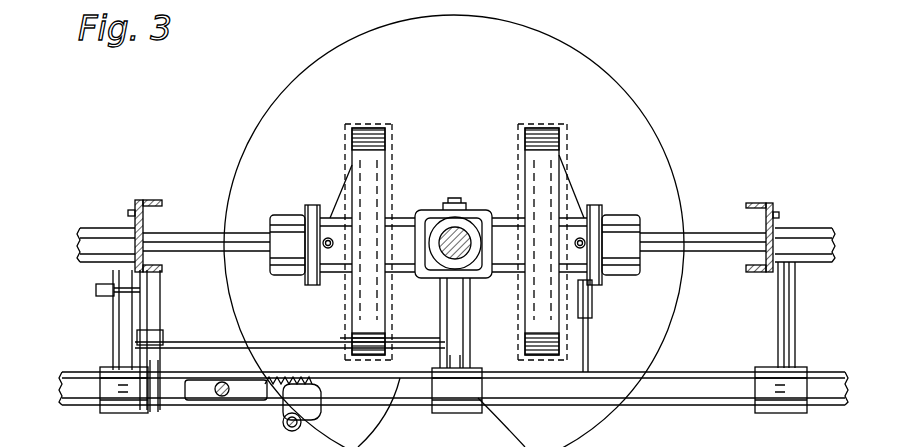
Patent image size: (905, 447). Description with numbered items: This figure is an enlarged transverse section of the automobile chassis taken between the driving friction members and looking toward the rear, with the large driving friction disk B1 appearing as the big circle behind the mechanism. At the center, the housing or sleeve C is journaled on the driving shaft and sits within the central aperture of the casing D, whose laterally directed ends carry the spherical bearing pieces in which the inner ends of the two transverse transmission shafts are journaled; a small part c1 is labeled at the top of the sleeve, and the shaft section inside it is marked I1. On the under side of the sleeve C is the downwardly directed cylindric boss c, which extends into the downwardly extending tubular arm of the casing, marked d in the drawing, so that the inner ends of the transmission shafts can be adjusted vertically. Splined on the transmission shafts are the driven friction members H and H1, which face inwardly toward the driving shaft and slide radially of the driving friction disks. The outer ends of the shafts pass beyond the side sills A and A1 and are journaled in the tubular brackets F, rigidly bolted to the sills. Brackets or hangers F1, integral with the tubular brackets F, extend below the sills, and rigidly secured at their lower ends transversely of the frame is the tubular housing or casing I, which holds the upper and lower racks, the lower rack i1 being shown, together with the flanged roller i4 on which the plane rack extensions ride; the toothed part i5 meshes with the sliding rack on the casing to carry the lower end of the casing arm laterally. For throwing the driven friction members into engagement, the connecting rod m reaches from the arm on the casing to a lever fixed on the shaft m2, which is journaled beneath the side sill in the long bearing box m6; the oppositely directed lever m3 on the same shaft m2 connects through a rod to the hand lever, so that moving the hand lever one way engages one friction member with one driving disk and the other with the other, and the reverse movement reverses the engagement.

The driving friction disk B1 is at (557, 80).
The tubular bracket F is at (95, 236).
The side sill A1 is at (157, 203).
The axle I1 is at (462, 232).
The driven friction member H is at (360, 150).
The driven friction member H1 is at (558, 130).
The casing D is at (487, 216).
The housing or sleeve C is at (437, 220).
The cap bolt c1 is at (451, 198).
The side sill A is at (758, 204).
The tubular housing or casing I is at (706, 397).
The lever m3 is at (110, 290).
The bracket or hanger F1 is at (120, 328).
The shaft m2 is at (158, 312).
The connecting rod m is at (208, 343).
The bearing box m6 is at (152, 380).
The lower rack i1 is at (189, 408).
The pinion housing i5 is at (268, 410).
The flanged roller i4 is at (286, 428).
The bracket d is at (412, 270).
The cylindric boss c is at (430, 282).